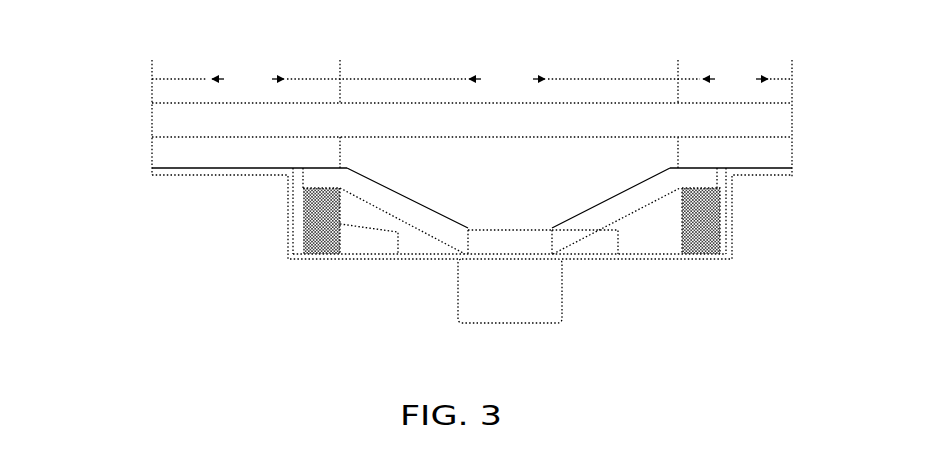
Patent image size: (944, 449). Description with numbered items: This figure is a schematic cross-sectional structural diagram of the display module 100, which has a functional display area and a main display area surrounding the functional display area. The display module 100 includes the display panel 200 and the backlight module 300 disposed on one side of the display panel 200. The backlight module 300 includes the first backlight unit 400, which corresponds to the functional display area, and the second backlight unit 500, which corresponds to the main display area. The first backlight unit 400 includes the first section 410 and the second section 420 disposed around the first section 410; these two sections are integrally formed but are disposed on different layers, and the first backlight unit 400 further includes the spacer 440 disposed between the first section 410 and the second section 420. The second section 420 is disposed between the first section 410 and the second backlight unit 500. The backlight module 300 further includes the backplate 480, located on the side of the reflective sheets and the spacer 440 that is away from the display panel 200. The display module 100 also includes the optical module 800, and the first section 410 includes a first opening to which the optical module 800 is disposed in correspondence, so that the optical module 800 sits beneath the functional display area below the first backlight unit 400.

The display module 100 is at (97, 47).
The display panel 200 is at (152, 118).
The backlight module 300 is at (212, 293).
The first backlight unit 400 is at (212, 188).
The first section 410 is at (303, 218).
The second section 420 is at (293, 177).
The spacer 440 is at (293, 244).
The backplate 480 is at (152, 173).
The second backlight unit 500 is at (152, 152).
The optical module 800 is at (458, 290).